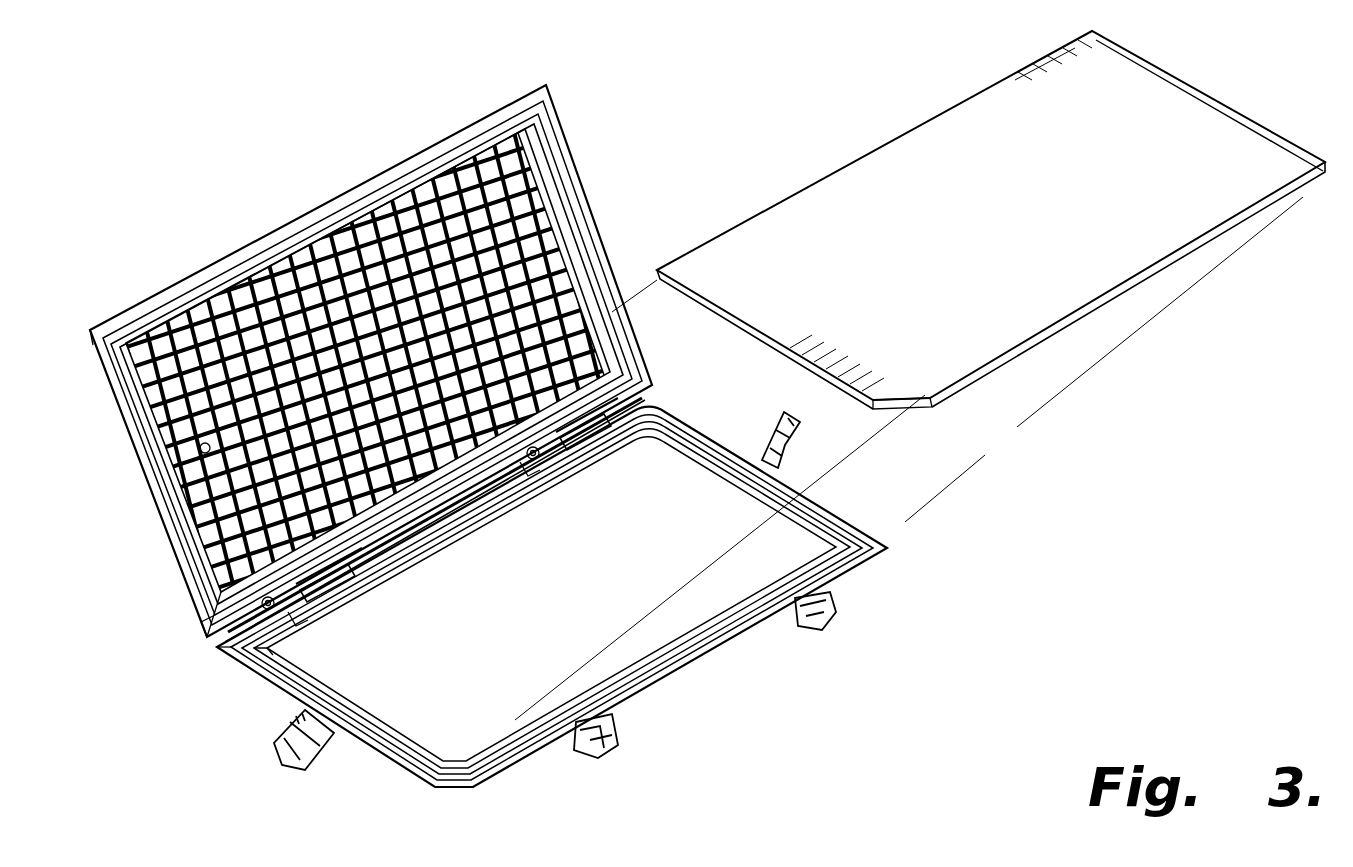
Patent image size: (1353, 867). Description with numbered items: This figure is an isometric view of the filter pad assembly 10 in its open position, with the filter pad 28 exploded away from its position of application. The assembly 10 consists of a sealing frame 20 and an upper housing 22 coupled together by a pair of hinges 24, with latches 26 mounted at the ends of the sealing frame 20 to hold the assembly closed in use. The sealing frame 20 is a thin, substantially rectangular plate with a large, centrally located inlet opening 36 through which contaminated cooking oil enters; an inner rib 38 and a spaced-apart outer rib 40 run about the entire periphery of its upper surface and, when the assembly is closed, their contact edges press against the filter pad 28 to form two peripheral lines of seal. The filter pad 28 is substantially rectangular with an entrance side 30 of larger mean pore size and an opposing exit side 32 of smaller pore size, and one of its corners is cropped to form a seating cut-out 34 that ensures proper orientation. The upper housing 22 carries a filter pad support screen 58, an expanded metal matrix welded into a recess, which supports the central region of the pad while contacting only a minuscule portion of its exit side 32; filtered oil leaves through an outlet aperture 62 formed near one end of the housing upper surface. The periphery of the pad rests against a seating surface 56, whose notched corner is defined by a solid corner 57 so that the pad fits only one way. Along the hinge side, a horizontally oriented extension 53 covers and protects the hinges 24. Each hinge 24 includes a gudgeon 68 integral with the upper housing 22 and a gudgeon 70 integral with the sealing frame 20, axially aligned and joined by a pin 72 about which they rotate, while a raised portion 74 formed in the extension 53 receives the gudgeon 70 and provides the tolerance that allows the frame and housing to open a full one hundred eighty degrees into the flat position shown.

The filter pad assembly 10 is at (1055, 602).
The sealing frame 20 is at (900, 548).
The upper housing 22 is at (128, 460).
The hinges 24 is at (372, 572).
The latches 26 is at (285, 748).
The filter pad 28 is at (1226, 95).
The entrance side 30 is at (1050, 327).
The exit side 32 is at (1245, 213).
The seating cut-out 34 is at (922, 410).
The inlet opening 36 is at (585, 655).
The inner rib 38 is at (272, 682).
The outer rib 40 is at (232, 655).
The extension 53 is at (208, 626).
The seating surface 56 is at (475, 140).
The solid corner 57 is at (157, 300).
The filter pad support screen 58 is at (545, 185).
The outlet aperture 62 is at (205, 453).
The gudgeon 68 is at (303, 592).
The gudgeon 70 is at (345, 584).
The pin 72 is at (215, 600).
The raised portion 74 is at (530, 458).